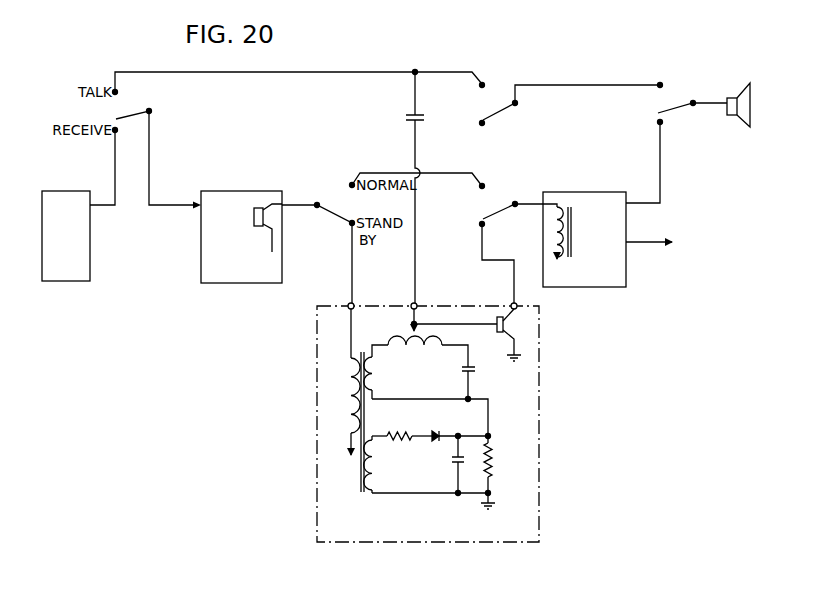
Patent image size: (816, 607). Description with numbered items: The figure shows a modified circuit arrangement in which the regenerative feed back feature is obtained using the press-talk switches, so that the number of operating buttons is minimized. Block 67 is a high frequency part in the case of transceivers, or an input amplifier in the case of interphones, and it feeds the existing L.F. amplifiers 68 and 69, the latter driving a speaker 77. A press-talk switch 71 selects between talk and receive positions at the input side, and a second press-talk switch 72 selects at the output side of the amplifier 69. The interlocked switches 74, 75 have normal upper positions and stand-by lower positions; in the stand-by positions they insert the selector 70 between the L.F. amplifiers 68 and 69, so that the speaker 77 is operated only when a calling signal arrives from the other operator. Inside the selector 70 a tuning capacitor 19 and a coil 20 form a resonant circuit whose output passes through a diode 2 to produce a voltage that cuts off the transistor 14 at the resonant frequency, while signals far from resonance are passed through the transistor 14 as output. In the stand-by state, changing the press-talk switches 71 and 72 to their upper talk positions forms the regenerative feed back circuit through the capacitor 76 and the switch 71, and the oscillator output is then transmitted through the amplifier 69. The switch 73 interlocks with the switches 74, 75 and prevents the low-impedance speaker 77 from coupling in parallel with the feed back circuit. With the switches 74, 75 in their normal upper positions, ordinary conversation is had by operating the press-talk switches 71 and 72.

The high frequency part 67 is at (56, 249).
The L.F. amplifier 68 is at (218, 249).
The L.F. amplifier 69 is at (587, 254).
The selector 70 is at (445, 422).
The press-talk switch 71 is at (128, 113).
The press-talk switch 72 is at (676, 111).
The switch 73 is at (504, 111).
The interlocked switch 74 is at (326, 208).
The interlocked switch 75 is at (487, 208).
The capacitor 76 is at (416, 116).
The speaker 77 is at (743, 95).
The transistor 14 is at (495, 335).
The tuning capacitor 19 is at (474, 373).
The coil 20 is at (443, 343).
The diode 2 is at (437, 442).